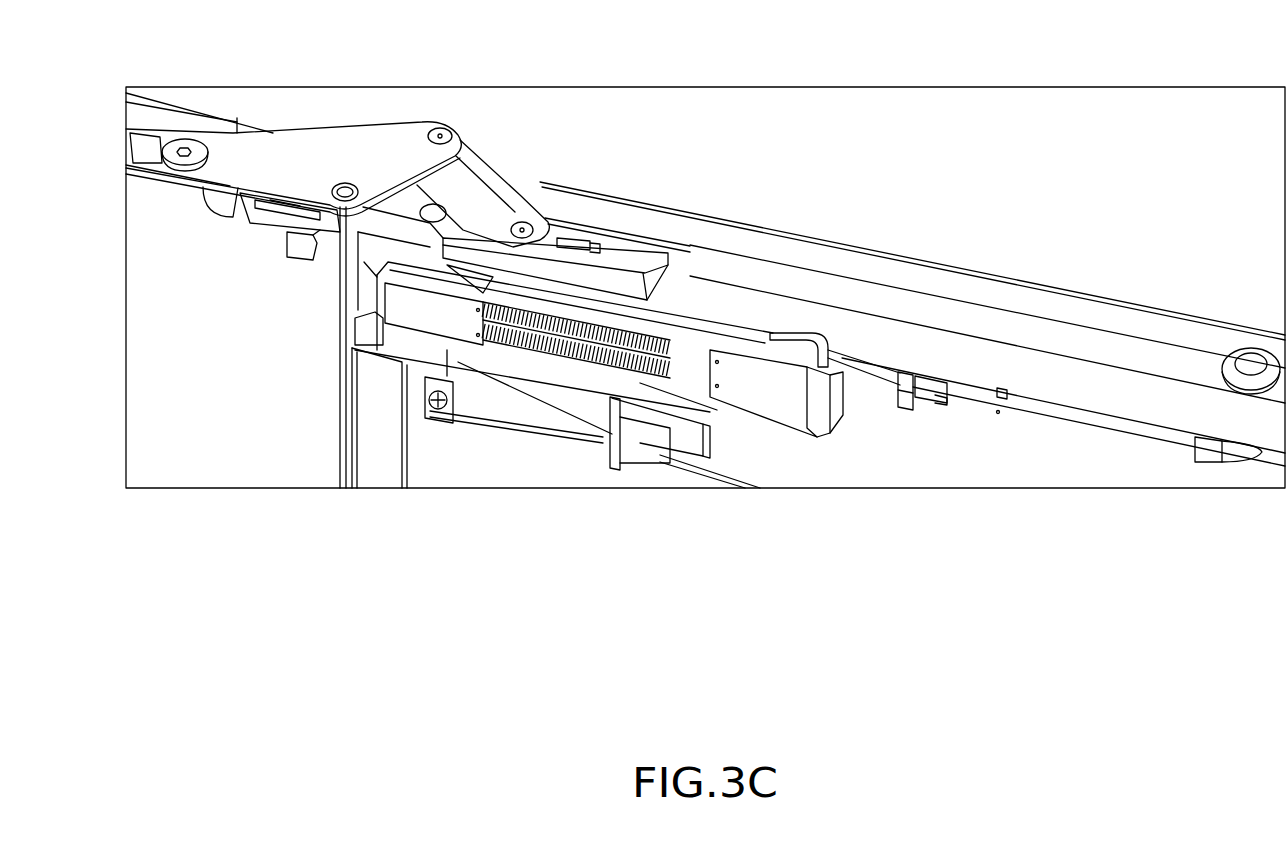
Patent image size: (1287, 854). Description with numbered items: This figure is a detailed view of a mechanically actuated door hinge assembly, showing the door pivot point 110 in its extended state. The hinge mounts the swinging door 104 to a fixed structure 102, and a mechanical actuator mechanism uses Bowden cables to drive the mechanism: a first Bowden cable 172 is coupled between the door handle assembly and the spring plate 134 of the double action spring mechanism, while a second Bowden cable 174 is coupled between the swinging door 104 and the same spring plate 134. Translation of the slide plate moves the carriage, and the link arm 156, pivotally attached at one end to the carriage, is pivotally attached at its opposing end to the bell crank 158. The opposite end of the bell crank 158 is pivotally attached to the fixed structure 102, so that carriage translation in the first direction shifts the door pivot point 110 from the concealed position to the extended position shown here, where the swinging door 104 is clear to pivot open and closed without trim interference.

The fixed structure 102 is at (147, 293).
The swinging door 104 is at (570, 233).
The door pivot point 110 is at (439, 126).
The spring plate 134 is at (415, 350).
The link arm 156 is at (478, 185).
The bell crank 158 is at (302, 147).
The first Bowden cable 172 is at (747, 473).
The second Bowden cable 174 is at (1055, 417).